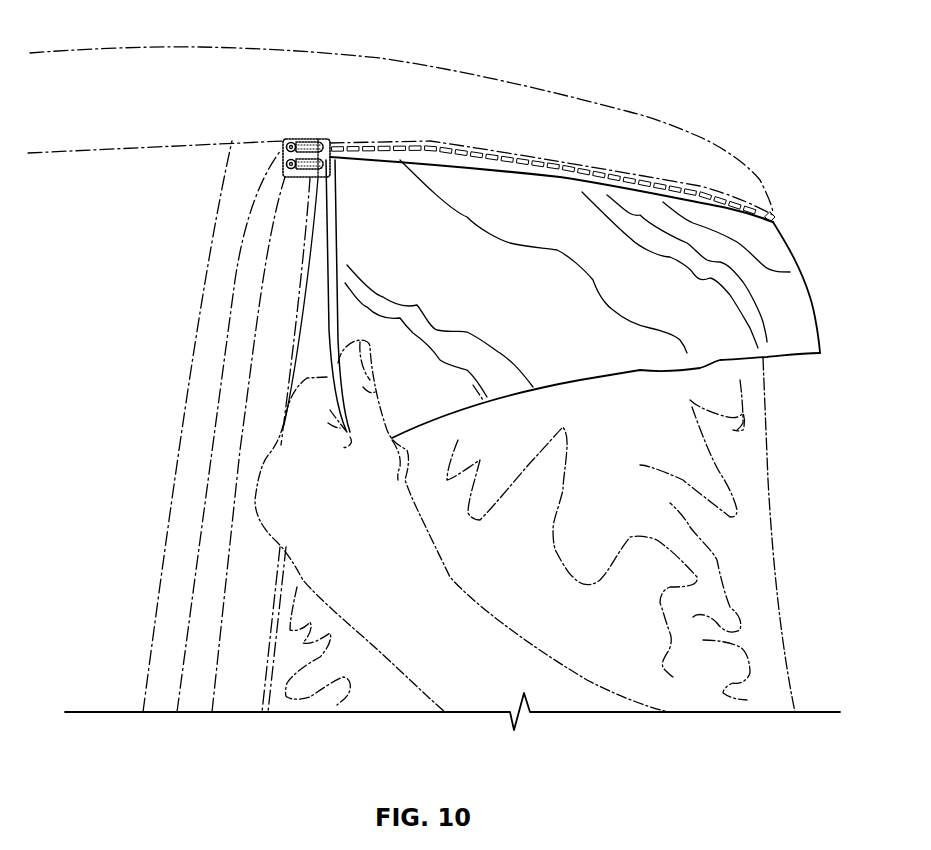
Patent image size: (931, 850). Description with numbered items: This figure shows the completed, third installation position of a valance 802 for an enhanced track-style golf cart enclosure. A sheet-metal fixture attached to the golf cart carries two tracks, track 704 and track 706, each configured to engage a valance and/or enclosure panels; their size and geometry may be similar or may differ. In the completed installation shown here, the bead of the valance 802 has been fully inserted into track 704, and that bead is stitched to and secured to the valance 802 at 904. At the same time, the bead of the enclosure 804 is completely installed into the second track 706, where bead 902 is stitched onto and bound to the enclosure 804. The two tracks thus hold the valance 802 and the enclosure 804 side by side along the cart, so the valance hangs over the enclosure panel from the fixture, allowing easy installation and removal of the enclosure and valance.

The track 704 is at (283, 145).
The track 706 is at (283, 167).
The valance 802 is at (782, 257).
The enclosure 804 is at (755, 490).
The bead 902 is at (332, 152).
The bead attachment point 904 is at (305, 140).